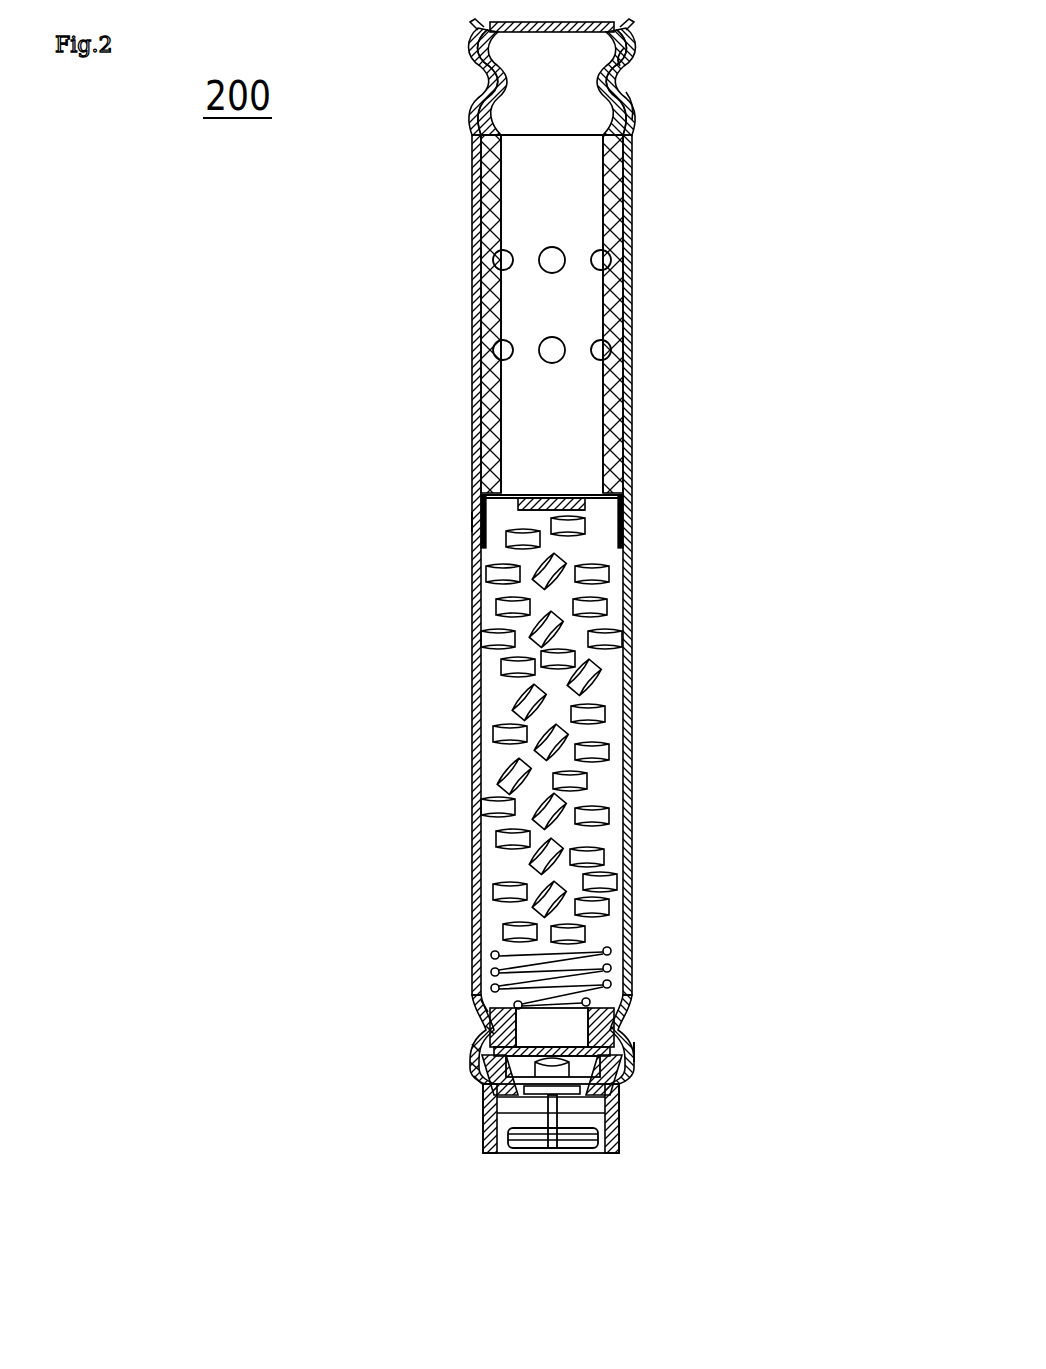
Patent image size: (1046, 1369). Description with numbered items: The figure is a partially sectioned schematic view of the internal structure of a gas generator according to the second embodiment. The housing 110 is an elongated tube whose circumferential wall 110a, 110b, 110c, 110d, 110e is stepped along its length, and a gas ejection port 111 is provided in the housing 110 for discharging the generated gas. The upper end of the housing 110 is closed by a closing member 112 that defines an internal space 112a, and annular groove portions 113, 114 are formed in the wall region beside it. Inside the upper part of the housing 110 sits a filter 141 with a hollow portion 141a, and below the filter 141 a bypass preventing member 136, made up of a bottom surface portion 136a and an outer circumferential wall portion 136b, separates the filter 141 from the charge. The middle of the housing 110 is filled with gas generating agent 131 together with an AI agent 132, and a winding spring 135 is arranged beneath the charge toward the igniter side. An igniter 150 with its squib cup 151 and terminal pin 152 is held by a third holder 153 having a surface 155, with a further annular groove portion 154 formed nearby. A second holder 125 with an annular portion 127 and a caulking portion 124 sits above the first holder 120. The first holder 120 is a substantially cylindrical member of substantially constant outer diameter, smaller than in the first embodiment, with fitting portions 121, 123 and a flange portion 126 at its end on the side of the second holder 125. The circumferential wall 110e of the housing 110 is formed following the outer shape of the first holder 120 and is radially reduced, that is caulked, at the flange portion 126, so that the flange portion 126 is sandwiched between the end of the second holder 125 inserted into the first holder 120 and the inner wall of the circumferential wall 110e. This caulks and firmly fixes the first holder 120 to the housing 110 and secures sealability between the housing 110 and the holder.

The housing 110 is at (470, 748).
The circumferential wall 110a is at (622, 52).
The circumferential wall 110b is at (625, 96).
The circumferential wall 110c is at (480, 522).
The circumferential wall 110d is at (622, 1038).
The circumferential wall 110e is at (618, 1092).
The gas ejection port 111 is at (490, 352).
The closing member 112 is at (614, 24).
The internal space 112a is at (538, 117).
The annular groove portion 113 is at (480, 83).
The annular groove portion 114 is at (476, 30).
The first holder 120 is at (603, 1148).
The fitting portion 121 is at (508, 1140).
The fitting portion 123 is at (552, 1113).
The caulking portion 124 is at (477, 1050).
The second holder 125 is at (473, 1077).
The flange portion 126 is at (470, 1092).
The annular portion 127 is at (480, 1068).
The gas generating agent 131 is at (590, 752).
The AI agent 132 is at (520, 505).
The winding spring 135 is at (612, 962).
The bypass preventing member 136 is at (483, 497).
The bottom surface portion 136a is at (582, 494).
The outer circumferential wall portion 136b is at (626, 522).
The filter 141 is at (608, 230).
The hollow portion 141a is at (583, 295).
The igniter 150 is at (598, 1078).
The squib cup 151 is at (555, 1027).
The terminal pin 152 is at (578, 1115).
The third holder 153 is at (482, 1025).
The annular groove portion 154 is at (483, 1030).
The surface 155 is at (473, 1013).